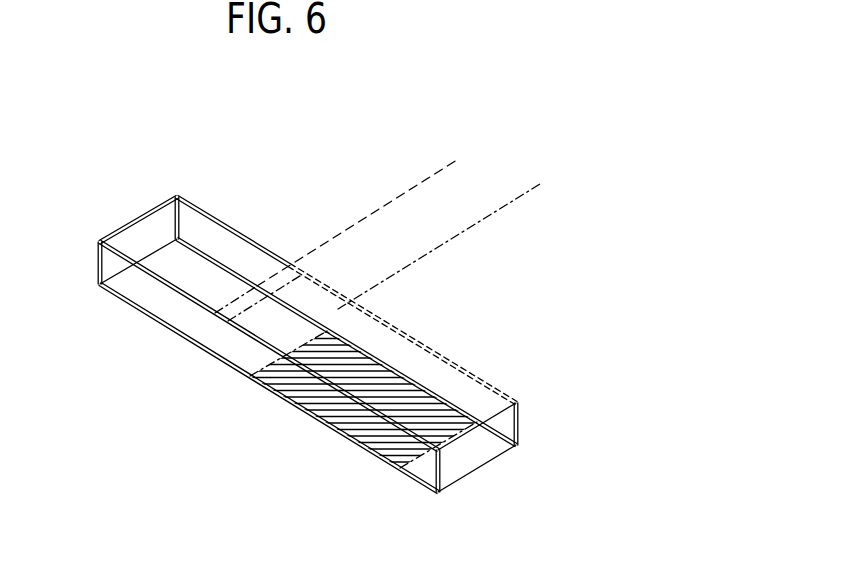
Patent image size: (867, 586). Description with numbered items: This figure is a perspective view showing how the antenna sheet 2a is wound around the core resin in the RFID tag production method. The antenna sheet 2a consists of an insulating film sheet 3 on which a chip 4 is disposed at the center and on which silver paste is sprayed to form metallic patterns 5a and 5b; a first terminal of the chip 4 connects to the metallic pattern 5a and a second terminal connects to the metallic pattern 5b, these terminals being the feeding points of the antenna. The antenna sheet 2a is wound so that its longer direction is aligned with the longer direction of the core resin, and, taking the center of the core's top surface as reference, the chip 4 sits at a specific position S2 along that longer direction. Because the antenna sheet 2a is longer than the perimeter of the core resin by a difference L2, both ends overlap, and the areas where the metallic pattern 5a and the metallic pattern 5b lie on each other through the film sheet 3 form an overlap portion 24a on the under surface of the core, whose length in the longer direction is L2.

The antenna sheet 2a is at (369, 162).
The insulating film sheet 3 is at (97, 262).
The chip 4 is at (257, 289).
The metallic pattern 5a is at (175, 203).
The metallic pattern 5b is at (500, 396).
The overlap portion 24a is at (410, 460).
The difference in length L2 is at (240, 393).
The specific position S2 is at (360, 230).